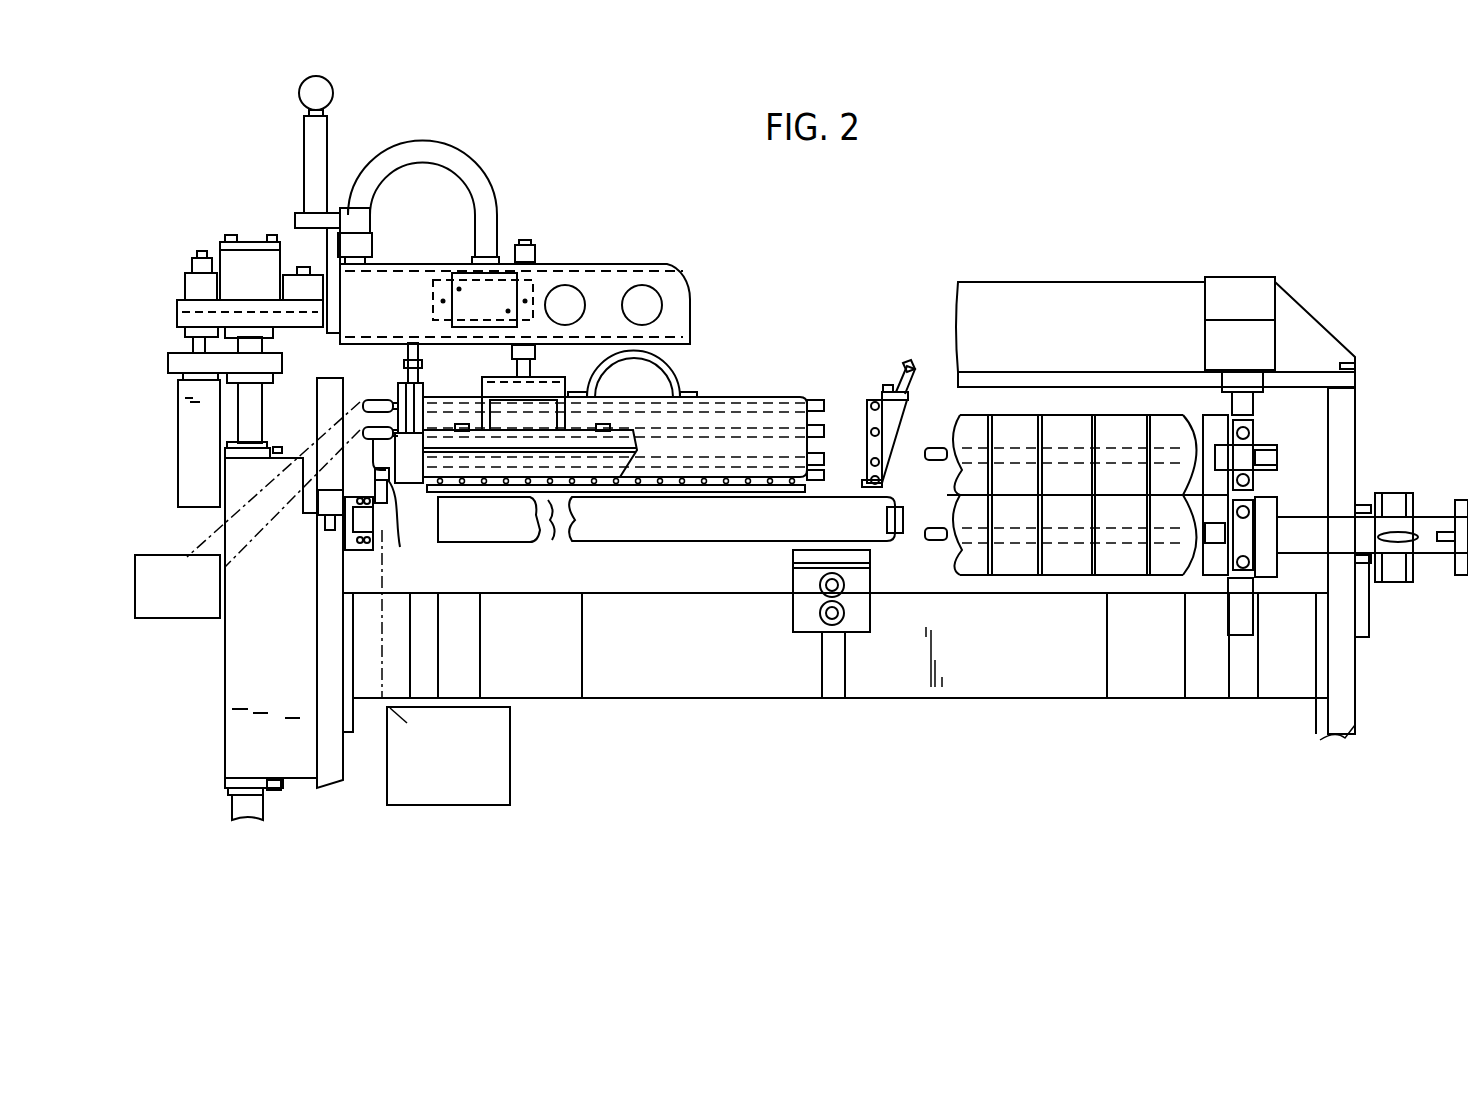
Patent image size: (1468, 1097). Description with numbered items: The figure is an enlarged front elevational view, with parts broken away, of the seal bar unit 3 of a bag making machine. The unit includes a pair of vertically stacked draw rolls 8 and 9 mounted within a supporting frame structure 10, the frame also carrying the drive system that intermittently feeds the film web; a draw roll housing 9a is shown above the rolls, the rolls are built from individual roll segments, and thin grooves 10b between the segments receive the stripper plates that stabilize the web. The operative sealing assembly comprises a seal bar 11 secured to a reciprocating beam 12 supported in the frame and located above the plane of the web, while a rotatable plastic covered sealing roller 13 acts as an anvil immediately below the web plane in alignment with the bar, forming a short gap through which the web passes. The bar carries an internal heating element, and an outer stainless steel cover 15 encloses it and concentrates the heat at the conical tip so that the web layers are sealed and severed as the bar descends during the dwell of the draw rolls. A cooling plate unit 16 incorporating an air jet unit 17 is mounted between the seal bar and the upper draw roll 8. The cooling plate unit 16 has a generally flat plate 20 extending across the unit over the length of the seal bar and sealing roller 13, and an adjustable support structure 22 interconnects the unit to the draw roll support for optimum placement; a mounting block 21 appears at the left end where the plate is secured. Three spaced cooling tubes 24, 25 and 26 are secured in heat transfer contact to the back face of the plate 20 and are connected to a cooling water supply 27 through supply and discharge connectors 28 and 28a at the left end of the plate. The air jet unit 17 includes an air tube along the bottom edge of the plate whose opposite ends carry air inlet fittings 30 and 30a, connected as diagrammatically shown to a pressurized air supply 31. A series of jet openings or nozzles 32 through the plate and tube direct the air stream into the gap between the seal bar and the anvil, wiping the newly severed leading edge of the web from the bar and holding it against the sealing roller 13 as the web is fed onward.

The seal bar unit 3 is at (503, 197).
The upper draw roll 8 is at (1064, 492).
The lower draw roll 9 is at (1063, 582).
The drum housing 9a is at (1148, 280).
The supporting frame structure 10 is at (801, 420).
The thin grooves 10b is at (1148, 578).
The seal bar 11 is at (599, 469).
The reciprocating beam 12 is at (668, 288).
The sealing roller 13 is at (762, 552).
The outer stainless steel cover 15 is at (623, 443).
The cooling plate unit 16 is at (626, 393).
The air jet unit 17 is at (818, 490).
The flat plate 20 is at (781, 412).
The mounting block 21 is at (434, 387).
The adjustable support structure 22 is at (408, 352).
The cooling tube 24 is at (817, 404).
The cooling tube 25 is at (821, 430).
The cooling tube 26 is at (820, 458).
The cooling water supply 27 is at (182, 620).
The supply connector 28 is at (382, 441).
The discharge connector 28a is at (380, 400).
The air inlet fitting 30 is at (394, 541).
The air inlet fitting 30a is at (485, 718).
The pressurized air supply 31 is at (512, 767).
The jet openings or nozzles 32 is at (755, 484).